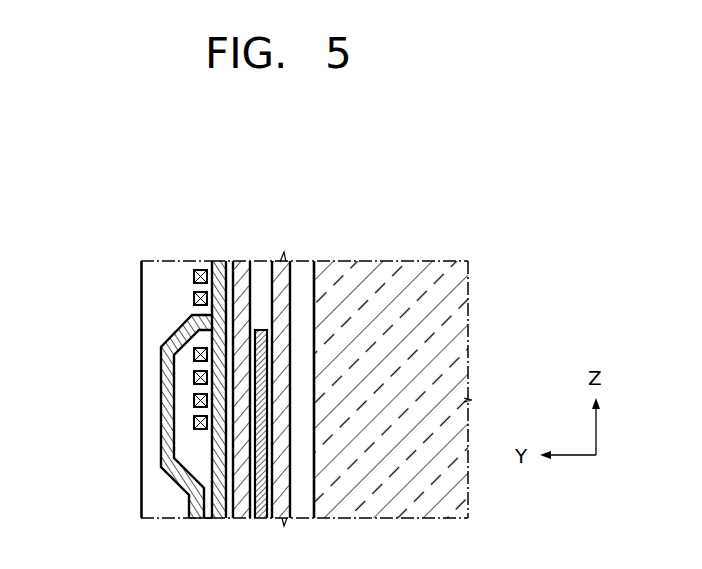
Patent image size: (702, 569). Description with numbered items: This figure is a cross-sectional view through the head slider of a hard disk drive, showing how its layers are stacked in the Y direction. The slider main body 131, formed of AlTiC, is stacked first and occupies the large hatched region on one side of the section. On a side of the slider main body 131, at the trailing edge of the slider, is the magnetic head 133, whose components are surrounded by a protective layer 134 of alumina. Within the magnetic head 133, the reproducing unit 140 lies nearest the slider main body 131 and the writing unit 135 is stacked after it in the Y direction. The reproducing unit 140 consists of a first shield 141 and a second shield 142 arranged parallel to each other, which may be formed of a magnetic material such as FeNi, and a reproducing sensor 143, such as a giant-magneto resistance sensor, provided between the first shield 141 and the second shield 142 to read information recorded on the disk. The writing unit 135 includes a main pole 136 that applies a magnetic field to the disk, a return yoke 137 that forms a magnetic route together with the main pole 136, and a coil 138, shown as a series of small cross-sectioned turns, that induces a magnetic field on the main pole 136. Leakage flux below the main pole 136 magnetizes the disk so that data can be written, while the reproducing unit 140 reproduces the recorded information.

The slider main body 131 is at (400, 280).
The magnetic head 133 is at (138, 261).
The protective layer 134 is at (171, 261).
The writing unit 135 is at (65, 323).
The main pole 136 is at (207, 452).
The return yoke 137 is at (167, 393).
The coil 138 is at (193, 298).
The reproducing unit 140 is at (322, 198).
The first shield 141 is at (242, 268).
The second shield 142 is at (285, 297).
The reproducing sensor 143 is at (260, 328).